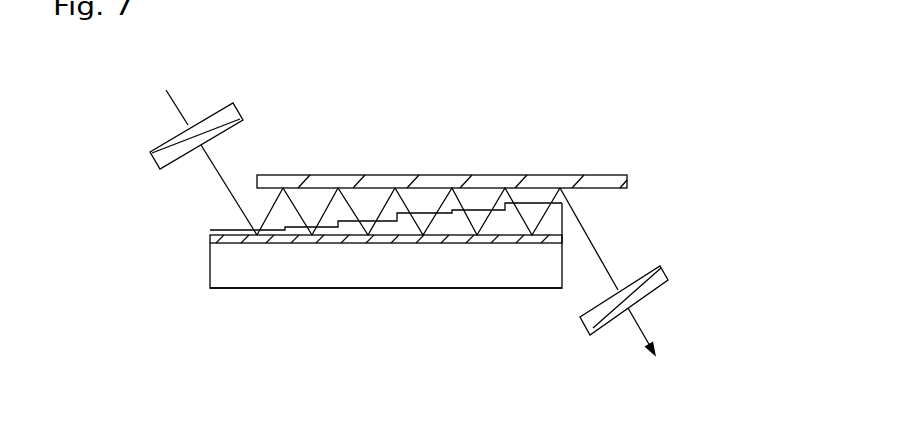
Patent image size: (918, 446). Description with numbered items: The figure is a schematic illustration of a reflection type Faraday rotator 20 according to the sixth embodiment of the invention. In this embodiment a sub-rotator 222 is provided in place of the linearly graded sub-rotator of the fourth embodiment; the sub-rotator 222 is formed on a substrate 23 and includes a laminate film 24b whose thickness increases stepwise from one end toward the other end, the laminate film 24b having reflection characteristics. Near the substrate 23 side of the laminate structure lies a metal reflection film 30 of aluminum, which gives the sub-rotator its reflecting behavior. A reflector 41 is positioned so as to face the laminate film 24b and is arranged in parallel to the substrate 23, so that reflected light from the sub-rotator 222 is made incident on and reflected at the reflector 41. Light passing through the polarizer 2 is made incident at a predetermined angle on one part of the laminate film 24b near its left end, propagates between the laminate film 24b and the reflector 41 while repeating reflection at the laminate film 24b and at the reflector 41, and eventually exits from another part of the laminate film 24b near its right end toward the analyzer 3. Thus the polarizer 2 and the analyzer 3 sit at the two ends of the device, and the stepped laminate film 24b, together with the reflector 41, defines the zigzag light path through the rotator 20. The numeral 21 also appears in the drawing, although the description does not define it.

The polarizer 2 is at (135, 150).
The analyzer 3 is at (695, 305).
The reflection type Faraday rotator 20 is at (566, 141).
The liquid crystal cell 21 is at (627, 128).
The substrate 23 is at (226, 269).
The laminate film 24b is at (213, 243).
The metal reflection film 30 is at (563, 243).
The reflector 41 is at (516, 166).
The sub-rotator 222 is at (268, 296).